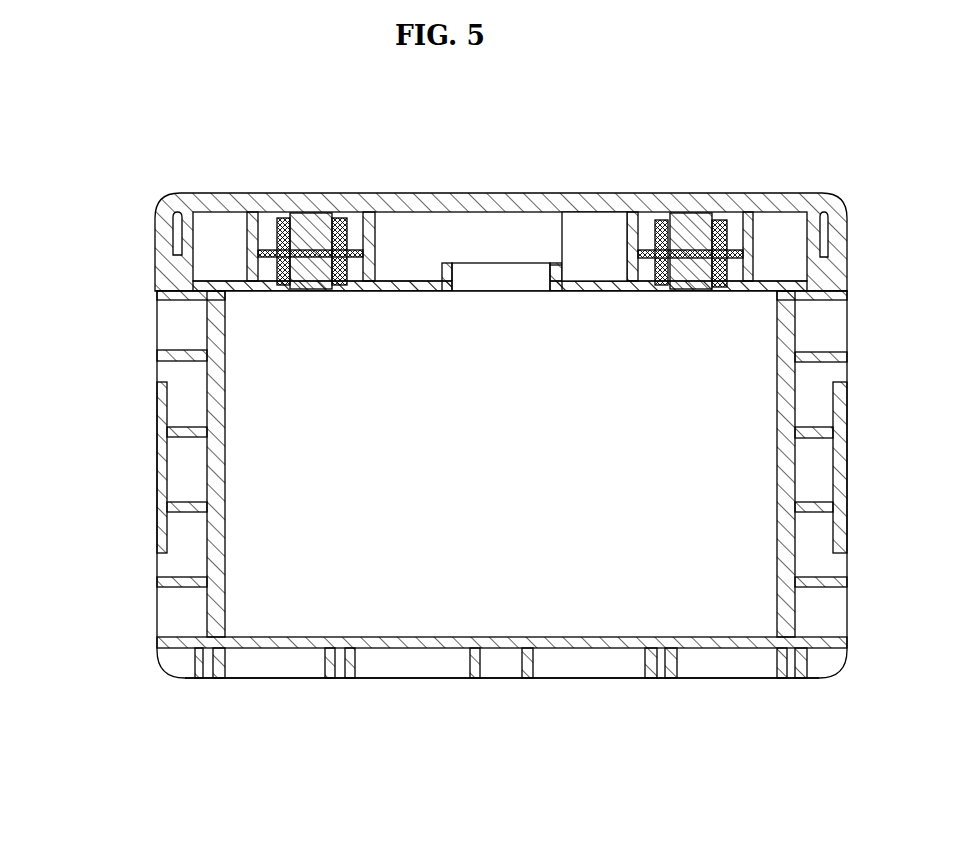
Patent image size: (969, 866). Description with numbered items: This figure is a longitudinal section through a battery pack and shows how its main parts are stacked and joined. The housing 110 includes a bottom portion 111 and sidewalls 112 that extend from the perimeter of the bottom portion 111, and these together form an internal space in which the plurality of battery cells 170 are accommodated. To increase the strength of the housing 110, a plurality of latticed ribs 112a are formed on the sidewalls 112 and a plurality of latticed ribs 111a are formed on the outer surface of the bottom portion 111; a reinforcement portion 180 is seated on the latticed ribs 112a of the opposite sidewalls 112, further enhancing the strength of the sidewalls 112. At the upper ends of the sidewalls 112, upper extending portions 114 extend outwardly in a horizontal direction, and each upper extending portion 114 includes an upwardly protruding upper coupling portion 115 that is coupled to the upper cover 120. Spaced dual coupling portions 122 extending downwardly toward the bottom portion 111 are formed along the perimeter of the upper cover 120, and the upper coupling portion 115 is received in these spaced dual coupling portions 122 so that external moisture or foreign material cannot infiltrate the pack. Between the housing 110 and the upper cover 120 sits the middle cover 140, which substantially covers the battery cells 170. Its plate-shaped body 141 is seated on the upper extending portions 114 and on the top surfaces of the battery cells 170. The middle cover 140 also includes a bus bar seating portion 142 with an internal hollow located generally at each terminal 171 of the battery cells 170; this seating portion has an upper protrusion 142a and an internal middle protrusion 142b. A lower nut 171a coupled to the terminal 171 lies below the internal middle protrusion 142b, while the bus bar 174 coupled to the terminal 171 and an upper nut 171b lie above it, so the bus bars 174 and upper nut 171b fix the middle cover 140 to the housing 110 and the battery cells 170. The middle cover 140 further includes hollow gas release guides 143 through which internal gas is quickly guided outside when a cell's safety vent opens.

The housing 110 is at (433, 520).
The bottom portion 111 is at (275, 648).
The latticed ribs 111a is at (673, 678).
The sidewalls 112 is at (210, 563).
The latticed ribs 112a is at (157, 347).
The upper extending portion 114 is at (157, 312).
The upper coupling portion 115 is at (155, 265).
The upper cover 120 is at (449, 192).
The spaced dual coupling portions 122 is at (155, 223).
The middle cover 140 is at (424, 270).
The plate-shaped body 141 is at (575, 280).
The bus bar seating portion 142 is at (343, 191).
The upper protrusion 142a is at (355, 222).
The internal middle protrusion 142b is at (367, 273).
The gas release guide 143 is at (557, 266).
The battery cell 170 is at (411, 605).
The terminal 171 is at (720, 213).
The lower nut 171a is at (753, 270).
The upper nut 171b is at (720, 213).
The bus bar 174 is at (648, 250).
The reinforcement portion 180 is at (150, 455).